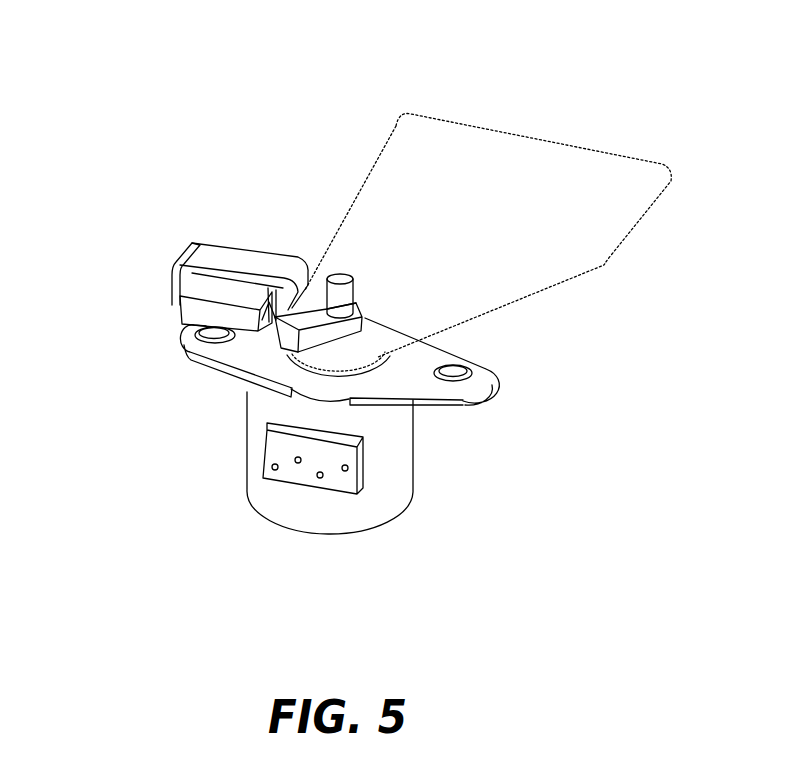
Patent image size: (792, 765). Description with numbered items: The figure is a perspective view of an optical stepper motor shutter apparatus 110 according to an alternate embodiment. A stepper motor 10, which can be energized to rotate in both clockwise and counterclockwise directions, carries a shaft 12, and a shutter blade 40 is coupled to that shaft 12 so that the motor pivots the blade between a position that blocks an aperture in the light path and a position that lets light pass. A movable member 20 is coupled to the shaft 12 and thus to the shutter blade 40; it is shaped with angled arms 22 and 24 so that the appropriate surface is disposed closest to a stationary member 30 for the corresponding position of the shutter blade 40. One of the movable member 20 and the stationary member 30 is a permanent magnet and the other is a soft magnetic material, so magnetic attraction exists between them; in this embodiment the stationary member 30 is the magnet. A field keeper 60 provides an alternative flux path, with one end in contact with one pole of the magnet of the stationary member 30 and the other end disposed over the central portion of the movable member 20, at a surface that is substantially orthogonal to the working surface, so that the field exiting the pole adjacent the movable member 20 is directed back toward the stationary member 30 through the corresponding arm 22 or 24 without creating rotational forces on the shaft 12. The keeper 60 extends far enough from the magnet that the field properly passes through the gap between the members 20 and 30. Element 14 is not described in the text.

The stepper motor 10 is at (247, 510).
The shaft 12 is at (362, 292).
The mounting plate 14 is at (238, 376).
The movable member 20 is at (329, 337).
The angled arm 22 is at (277, 295).
The angled arm 24 is at (286, 341).
The stationary member 30 is at (203, 311).
The shutter blade 40 is at (480, 140).
The field keeper 60 is at (243, 258).
The optical stepper motor shutter apparatus 110 is at (781, 458).